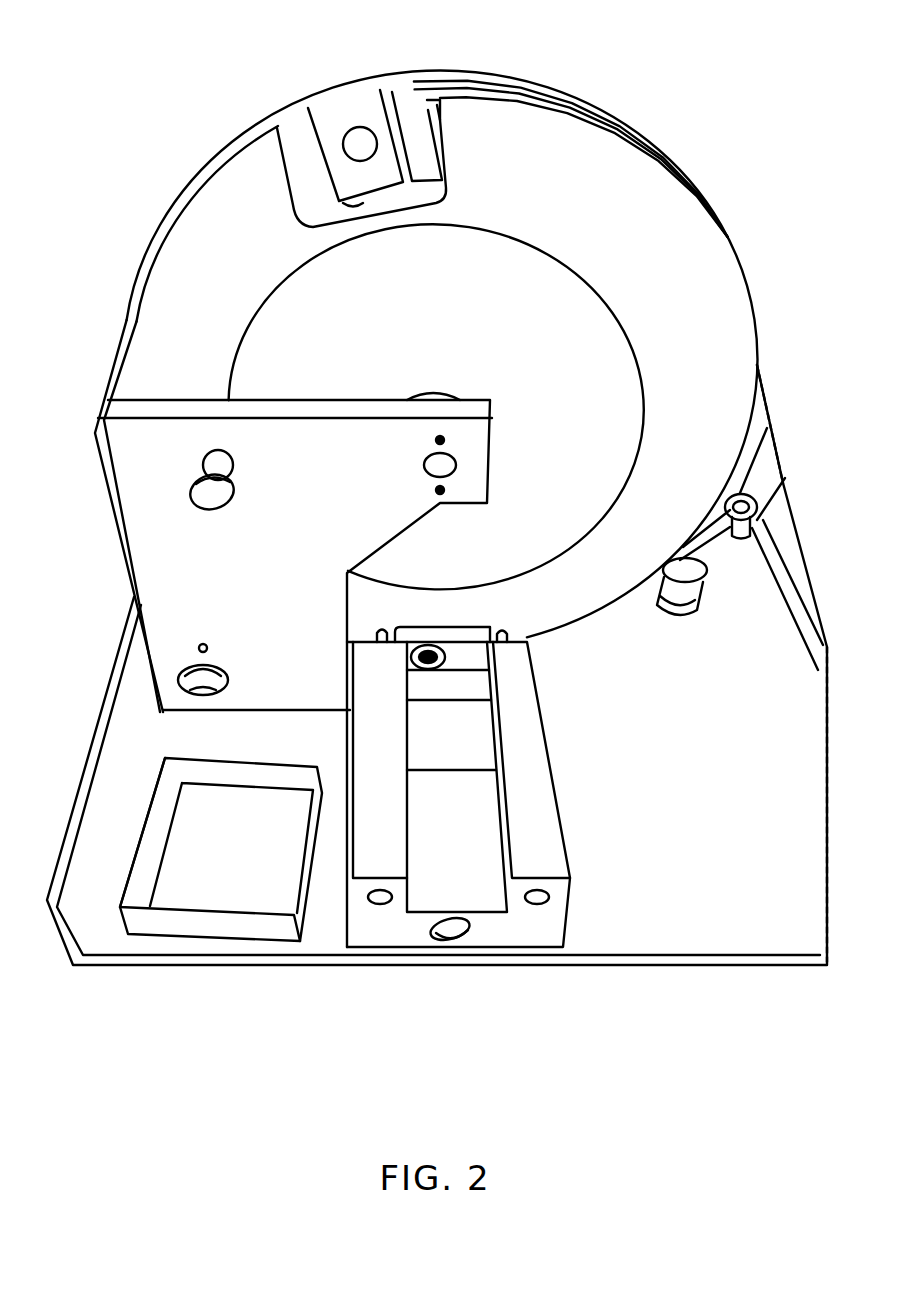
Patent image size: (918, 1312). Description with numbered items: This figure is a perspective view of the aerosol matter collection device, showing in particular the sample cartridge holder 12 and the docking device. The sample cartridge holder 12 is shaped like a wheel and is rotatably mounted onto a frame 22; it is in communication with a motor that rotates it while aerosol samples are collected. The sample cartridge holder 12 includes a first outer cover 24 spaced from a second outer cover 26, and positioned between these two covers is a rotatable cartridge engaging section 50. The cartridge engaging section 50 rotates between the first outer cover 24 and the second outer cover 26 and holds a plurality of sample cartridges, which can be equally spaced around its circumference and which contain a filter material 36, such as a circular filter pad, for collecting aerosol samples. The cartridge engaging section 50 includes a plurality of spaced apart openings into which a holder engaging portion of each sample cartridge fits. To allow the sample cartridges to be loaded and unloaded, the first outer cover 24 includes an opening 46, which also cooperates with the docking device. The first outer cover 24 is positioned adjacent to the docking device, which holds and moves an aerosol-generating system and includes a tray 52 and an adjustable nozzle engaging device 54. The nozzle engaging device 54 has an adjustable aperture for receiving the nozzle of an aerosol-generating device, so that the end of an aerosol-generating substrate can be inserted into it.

The sample cartridge holder 12 is at (137, 348).
The frame 22 is at (118, 542).
The first outer cover 24 is at (680, 180).
The second outer cover 26 is at (347, 87).
The filter material 36 is at (436, 668).
The opening 46 is at (412, 126).
The cartridge engaging section 50 is at (276, 127).
The tray 52 is at (473, 885).
The nozzle engaging device 54 is at (452, 630).